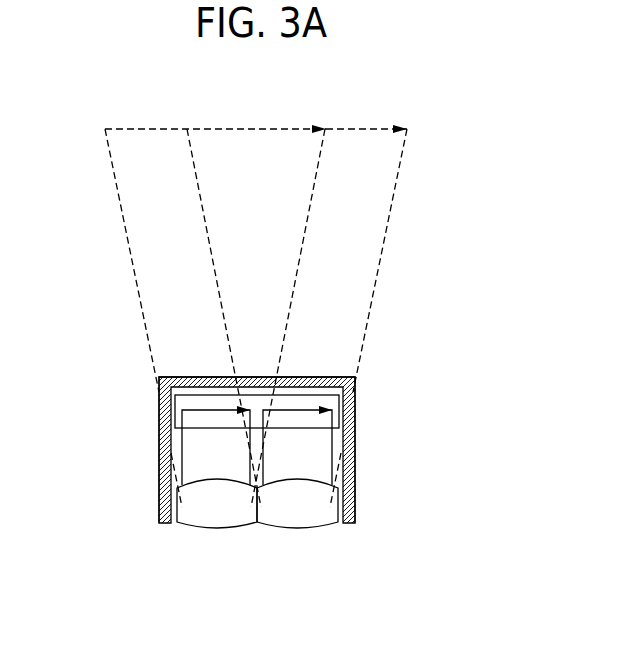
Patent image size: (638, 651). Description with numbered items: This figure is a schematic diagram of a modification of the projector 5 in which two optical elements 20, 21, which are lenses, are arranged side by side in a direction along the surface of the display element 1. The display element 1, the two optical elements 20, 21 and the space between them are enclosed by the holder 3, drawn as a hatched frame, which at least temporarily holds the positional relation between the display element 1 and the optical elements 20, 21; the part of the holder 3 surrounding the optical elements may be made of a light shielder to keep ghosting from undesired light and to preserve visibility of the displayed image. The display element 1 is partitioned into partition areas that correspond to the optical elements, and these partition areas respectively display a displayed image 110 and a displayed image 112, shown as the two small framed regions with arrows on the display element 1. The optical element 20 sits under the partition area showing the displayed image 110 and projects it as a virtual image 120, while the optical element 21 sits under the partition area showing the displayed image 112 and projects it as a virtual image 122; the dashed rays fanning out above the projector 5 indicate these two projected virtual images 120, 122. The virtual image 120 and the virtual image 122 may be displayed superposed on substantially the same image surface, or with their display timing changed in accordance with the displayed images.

The virtual image 120 is at (150, 128).
The virtual image 122 is at (353, 128).
The projector 5 is at (112, 392).
The holder 3 is at (160, 503).
The display element 1 is at (257, 402).
The displayed image 110 is at (217, 410).
The displayed image 112 is at (300, 410).
The optical element 20 is at (213, 525).
The optical element 21 is at (295, 525).